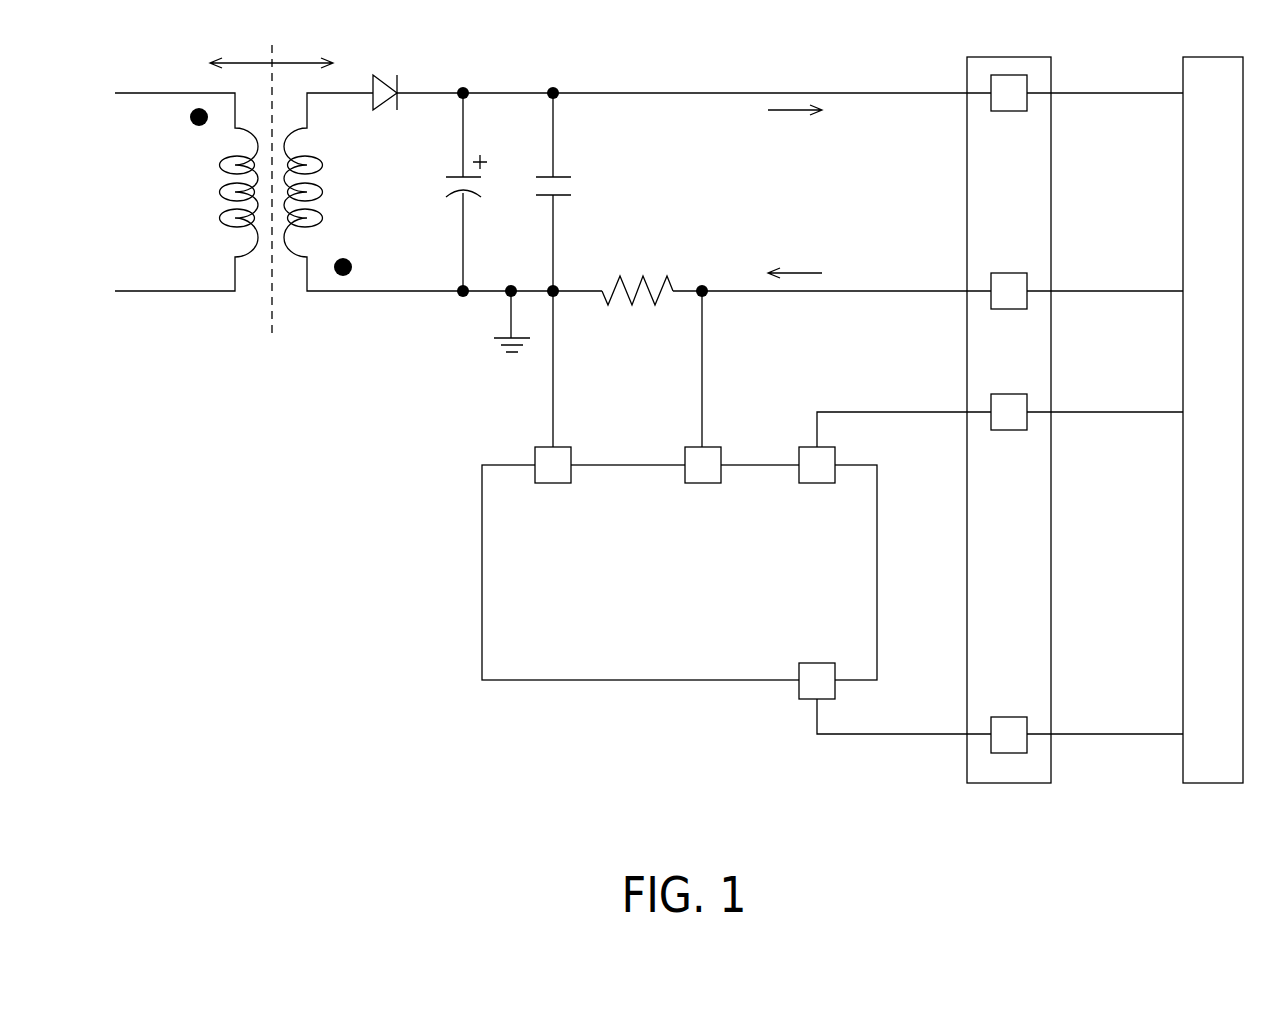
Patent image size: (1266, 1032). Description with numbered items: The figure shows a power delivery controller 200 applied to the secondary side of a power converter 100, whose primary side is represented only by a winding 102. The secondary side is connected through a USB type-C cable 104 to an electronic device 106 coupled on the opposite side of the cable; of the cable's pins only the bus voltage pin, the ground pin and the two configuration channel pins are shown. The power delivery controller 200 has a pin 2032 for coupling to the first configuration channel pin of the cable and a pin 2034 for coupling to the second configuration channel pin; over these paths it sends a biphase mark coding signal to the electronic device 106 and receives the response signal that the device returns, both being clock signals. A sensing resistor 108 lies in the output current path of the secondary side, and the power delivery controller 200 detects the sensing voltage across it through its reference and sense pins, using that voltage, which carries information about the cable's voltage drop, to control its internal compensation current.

The power converter 100 is at (277, 636).
The winding 102 is at (218, 222).
The USB type-C cable 104 is at (1051, 497).
The electronic device 106 is at (1183, 559).
The sensing resistor 108 is at (652, 278).
The power delivery controller 200 is at (602, 683).
The pin 2032 is at (810, 663).
The pin 2034 is at (810, 447).